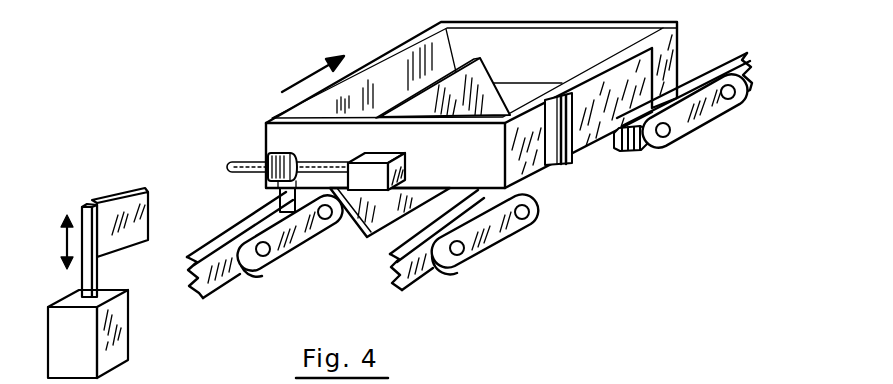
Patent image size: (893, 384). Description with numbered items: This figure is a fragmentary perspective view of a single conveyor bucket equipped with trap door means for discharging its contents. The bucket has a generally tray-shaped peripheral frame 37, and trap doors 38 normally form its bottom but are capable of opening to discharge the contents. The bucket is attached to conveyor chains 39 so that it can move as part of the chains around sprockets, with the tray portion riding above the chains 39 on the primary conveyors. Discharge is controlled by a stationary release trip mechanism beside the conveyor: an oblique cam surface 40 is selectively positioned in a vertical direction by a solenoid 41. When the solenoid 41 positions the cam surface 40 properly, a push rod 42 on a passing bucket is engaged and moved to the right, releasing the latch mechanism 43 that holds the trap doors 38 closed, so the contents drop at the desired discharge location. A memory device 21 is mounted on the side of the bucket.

The memory device 21 is at (583, 143).
The peripheral frame 37 is at (397, 77).
The trap doors 38 is at (377, 216).
The conveyor chains 39 is at (273, 269).
The oblique cam surface 40 is at (127, 207).
The solenoid 41 is at (118, 332).
The push rod 42 is at (307, 164).
The latch mechanism 43 is at (383, 156).